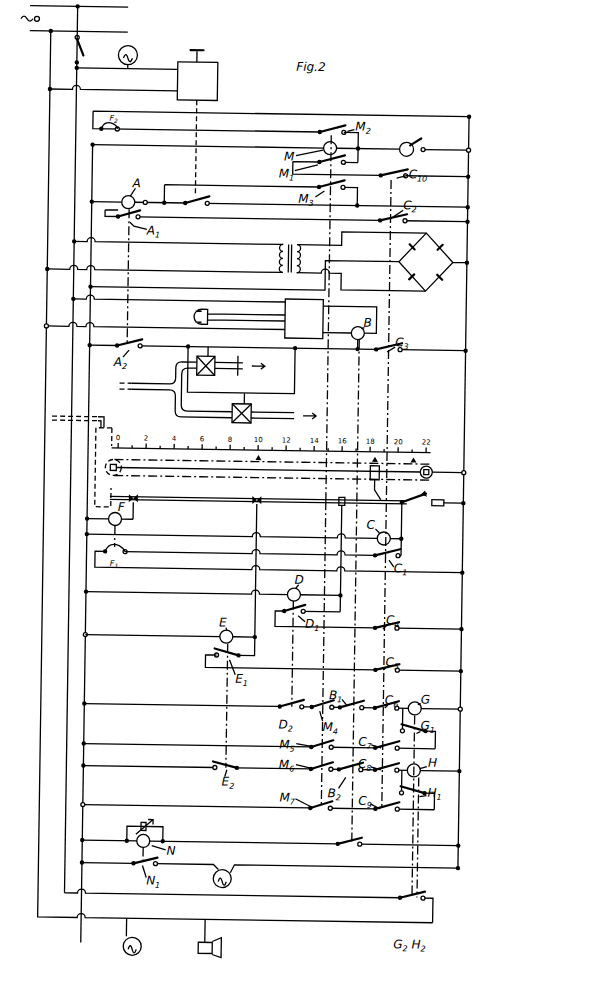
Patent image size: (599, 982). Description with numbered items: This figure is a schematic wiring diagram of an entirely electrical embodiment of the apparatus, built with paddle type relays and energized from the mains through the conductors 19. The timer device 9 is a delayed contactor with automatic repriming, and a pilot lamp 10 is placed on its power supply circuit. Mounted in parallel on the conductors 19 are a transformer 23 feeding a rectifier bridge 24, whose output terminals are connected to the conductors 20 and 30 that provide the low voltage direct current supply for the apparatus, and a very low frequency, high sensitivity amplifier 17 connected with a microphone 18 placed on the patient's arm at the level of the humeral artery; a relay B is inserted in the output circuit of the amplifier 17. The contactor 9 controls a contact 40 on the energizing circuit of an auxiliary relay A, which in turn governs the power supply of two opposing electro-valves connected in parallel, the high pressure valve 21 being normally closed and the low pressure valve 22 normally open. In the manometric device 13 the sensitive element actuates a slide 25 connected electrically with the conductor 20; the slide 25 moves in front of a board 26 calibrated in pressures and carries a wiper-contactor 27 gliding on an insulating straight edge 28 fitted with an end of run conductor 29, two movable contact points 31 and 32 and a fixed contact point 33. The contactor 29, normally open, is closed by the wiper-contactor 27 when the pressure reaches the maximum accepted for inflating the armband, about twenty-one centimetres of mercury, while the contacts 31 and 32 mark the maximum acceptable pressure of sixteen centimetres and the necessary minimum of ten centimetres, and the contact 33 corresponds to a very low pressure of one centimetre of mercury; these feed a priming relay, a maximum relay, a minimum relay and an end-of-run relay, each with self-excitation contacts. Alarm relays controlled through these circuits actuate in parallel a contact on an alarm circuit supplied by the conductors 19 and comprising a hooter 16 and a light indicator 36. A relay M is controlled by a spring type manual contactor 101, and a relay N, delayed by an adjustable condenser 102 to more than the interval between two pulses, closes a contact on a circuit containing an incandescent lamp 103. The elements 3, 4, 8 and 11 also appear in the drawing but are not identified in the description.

The outlet line 3 is at (291, 412).
The supply pipe 4 is at (158, 384).
The outlet line 8 is at (240, 361).
The timer device 9 is at (212, 91).
The pilot lamp 10 is at (129, 53).
The main switch knob 11 is at (193, 51).
The manometric device 13 is at (105, 432).
The hooter 16 is at (214, 944).
The amplifier 17 is at (317, 316).
The microphone 18 is at (192, 318).
The conductors 19 is at (70, 178).
The conductor 20 is at (464, 411).
The high pressure electro-valve 21 is at (251, 417).
The low pressure electro-valve 22 is at (205, 373).
The transformer 23 is at (173, 256).
The rectifier bridge 24 is at (427, 286).
The slide 25 is at (380, 462).
The board 26 is at (330, 440).
The wiper-contactor 27 is at (372, 491).
The insulating straight edge 28 is at (282, 494).
The end of run conductor 29 is at (410, 505).
The conductor 30 is at (95, 441).
The movable contact point 31 is at (339, 504).
The movable contact point 32 is at (260, 505).
The fixed contact point 33 is at (136, 497).
The light indicator 36 is at (148, 950).
The contact 40 is at (193, 203).
The manual contactor 101 is at (410, 139).
The adjustable condenser 102 is at (145, 832).
The incandescent lamp 103 is at (237, 879).